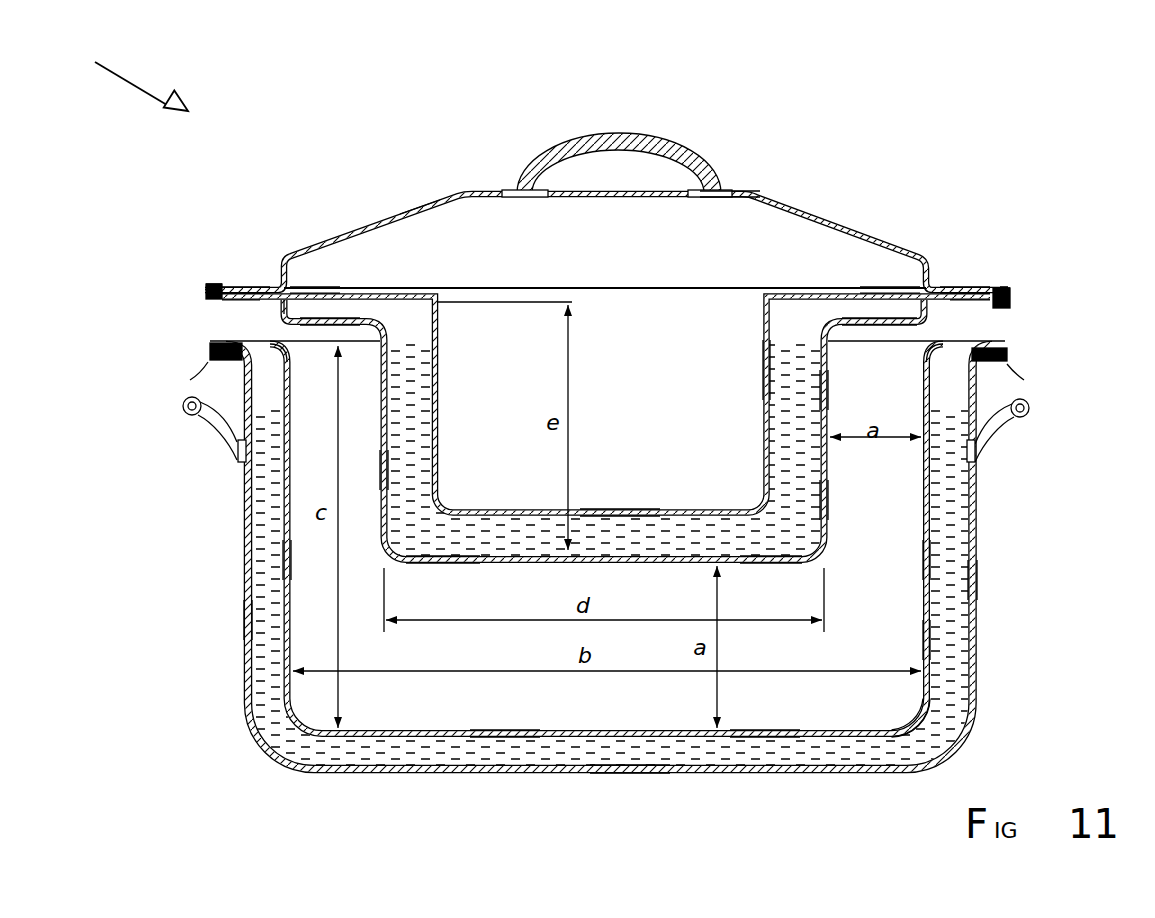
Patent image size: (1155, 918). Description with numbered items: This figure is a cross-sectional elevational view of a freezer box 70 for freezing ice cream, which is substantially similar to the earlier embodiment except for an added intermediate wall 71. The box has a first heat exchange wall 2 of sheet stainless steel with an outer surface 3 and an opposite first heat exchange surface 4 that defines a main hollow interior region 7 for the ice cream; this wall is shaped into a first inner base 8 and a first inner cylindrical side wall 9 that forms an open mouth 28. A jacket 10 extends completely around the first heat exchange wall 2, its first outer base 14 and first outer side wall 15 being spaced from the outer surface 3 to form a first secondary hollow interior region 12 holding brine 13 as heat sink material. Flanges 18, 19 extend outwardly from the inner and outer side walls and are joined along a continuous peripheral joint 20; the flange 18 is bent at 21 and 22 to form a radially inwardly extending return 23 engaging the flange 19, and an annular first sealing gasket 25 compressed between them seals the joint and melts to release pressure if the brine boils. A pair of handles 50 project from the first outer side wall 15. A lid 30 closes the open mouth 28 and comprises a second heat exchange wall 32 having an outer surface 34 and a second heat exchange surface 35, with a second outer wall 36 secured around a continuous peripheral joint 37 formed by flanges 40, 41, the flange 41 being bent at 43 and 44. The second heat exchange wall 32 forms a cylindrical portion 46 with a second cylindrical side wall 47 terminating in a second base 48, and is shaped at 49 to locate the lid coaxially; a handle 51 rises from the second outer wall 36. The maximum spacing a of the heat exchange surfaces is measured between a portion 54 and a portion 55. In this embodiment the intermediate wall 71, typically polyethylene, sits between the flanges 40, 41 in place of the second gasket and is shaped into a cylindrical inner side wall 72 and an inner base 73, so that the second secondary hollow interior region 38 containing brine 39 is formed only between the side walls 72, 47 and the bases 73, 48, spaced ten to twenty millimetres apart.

The first heat exchange wall 2 is at (930, 632).
The outer surface 3 is at (932, 652).
The first heat exchange surface 4 is at (920, 560).
The main hollow interior region 7 is at (503, 740).
The first inner base 8 is at (763, 740).
The first inner cylindrical side wall 9 is at (285, 557).
The jacket 10 is at (973, 700).
The first secondary hollow interior region 12 is at (953, 603).
The brine 13 is at (965, 730).
The first outer base 14 is at (627, 775).
The first outer side wall 15 is at (246, 615).
The flange 18 is at (207, 303).
The flange 19 is at (208, 433).
The continuous peripheral joint 20 is at (213, 357).
The bend 21 is at (207, 340).
The bend 22 is at (215, 362).
The radially inwardly extending return 23 is at (228, 366).
The first sealing gasket 25 is at (262, 352).
The open mouth 28 is at (893, 352).
The lid 30 is at (830, 218).
The second heat exchange wall 32 is at (316, 316).
The outer surface 34 is at (345, 320).
The second heat exchange surface 35 is at (378, 390).
The second outer wall 36 is at (762, 194).
The continuous peripheral joint 37 is at (208, 287).
The second secondary hollow interior region 38 is at (420, 392).
The brine 39 is at (487, 540).
The flange 40 is at (208, 299).
The flange 41 is at (252, 287).
The bend 43 is at (208, 290).
The bend 44 is at (205, 293).
The cylindrical portion 46 is at (828, 505).
The second cylindrical side wall 47 is at (381, 470).
The second base 48 is at (437, 566).
The shaped portion 49 is at (315, 290).
The handles 50 is at (213, 442).
The handle 51 is at (612, 132).
The portion 54 is at (905, 722).
The portion 55 is at (812, 568).
The freezer box 70 is at (141, 76).
The intermediate wall 71 is at (408, 290).
The cylindrical inner side wall 72 is at (763, 358).
The inner base 73 is at (617, 510).